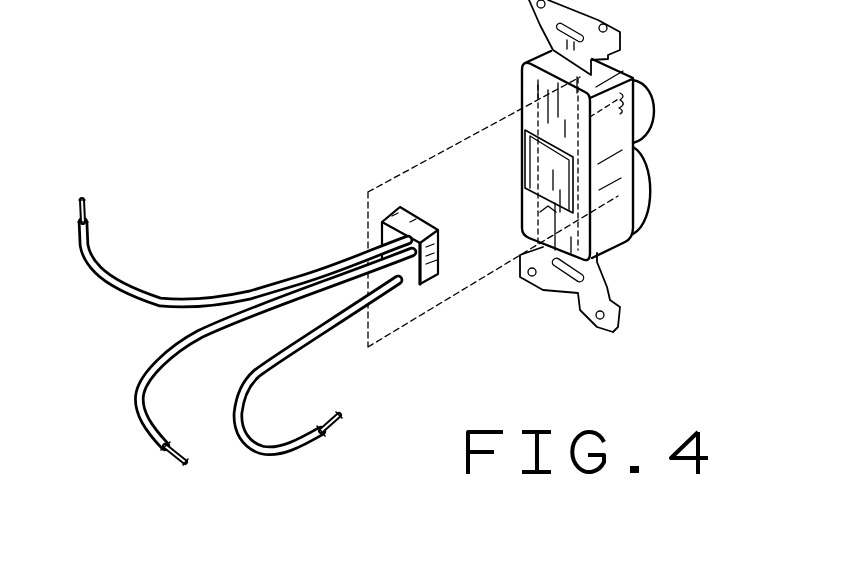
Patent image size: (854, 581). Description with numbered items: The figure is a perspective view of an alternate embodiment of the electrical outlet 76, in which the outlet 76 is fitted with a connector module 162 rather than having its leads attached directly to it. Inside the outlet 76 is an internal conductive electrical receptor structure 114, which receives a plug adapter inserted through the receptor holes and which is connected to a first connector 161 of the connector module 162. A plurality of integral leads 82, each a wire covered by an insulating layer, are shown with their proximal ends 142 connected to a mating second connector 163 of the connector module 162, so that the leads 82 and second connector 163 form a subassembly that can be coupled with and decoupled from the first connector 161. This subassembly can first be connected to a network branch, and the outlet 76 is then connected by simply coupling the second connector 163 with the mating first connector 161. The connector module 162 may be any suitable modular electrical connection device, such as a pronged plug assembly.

The electrical outlet 76 is at (643, 213).
The integral leads 82 is at (124, 288).
The internal conductive electrical receptor structure 114 is at (526, 103).
The proximal end 142 is at (383, 242).
The first connector 161 is at (540, 211).
The connector module 162 is at (484, 120).
The second connector 163 is at (412, 202).